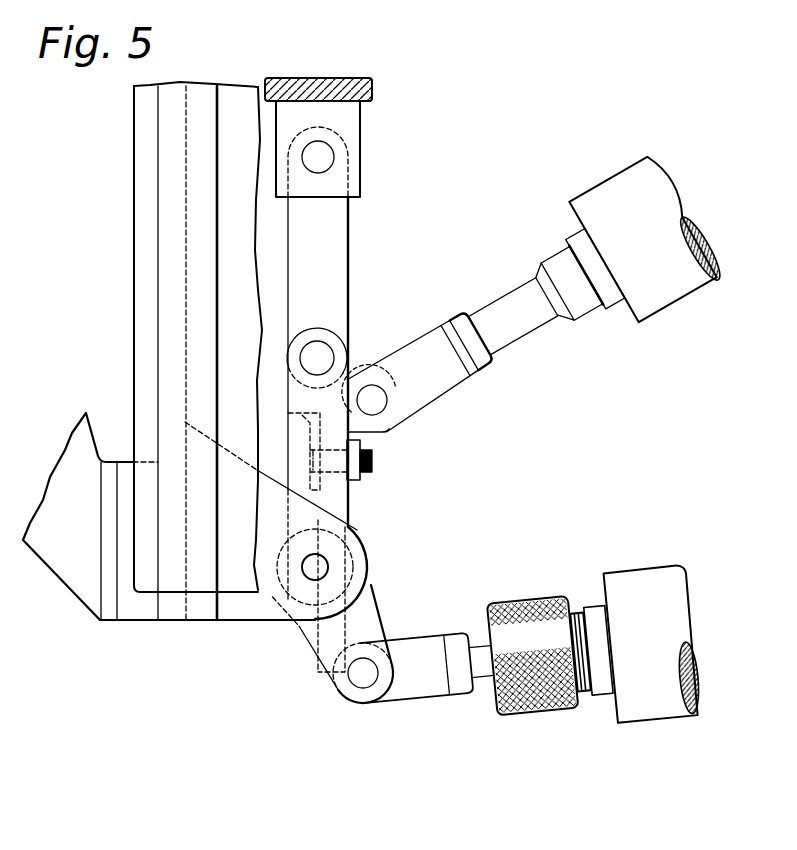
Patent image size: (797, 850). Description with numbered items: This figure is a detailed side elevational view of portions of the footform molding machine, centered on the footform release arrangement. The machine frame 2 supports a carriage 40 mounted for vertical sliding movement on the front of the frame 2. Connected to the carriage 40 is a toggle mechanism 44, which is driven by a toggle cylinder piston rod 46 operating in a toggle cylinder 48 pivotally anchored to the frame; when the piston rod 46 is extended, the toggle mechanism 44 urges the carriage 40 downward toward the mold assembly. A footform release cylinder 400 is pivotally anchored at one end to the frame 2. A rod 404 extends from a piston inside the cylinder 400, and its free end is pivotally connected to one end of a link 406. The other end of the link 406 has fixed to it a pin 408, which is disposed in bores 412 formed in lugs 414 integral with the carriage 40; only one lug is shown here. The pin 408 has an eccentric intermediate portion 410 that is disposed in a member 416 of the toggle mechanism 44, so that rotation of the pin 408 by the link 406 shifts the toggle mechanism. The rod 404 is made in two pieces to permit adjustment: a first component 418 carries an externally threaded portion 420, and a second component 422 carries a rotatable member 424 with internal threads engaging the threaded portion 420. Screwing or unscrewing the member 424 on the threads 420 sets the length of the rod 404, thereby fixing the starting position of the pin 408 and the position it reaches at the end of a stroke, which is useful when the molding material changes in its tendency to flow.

The frame 2 is at (140, 230).
The carriage 40 is at (60, 568).
The toggle mechanism 44 is at (348, 348).
The toggle cylinder piston rod 46 is at (522, 323).
The toggle cylinder 48 is at (670, 302).
The footform release cylinder 400 is at (645, 577).
The rod 404 is at (478, 650).
The link 406 is at (313, 633).
The pin 408 is at (328, 562).
The eccentric intermediate portion 410 is at (305, 553).
The bores 412 is at (372, 584).
The lugs 414 is at (358, 528).
The member 416 is at (352, 497).
The first component 418 is at (583, 607).
The externally threaded portion 420 is at (587, 690).
The second component 422 is at (530, 663).
The rotatable member 424 is at (513, 720).